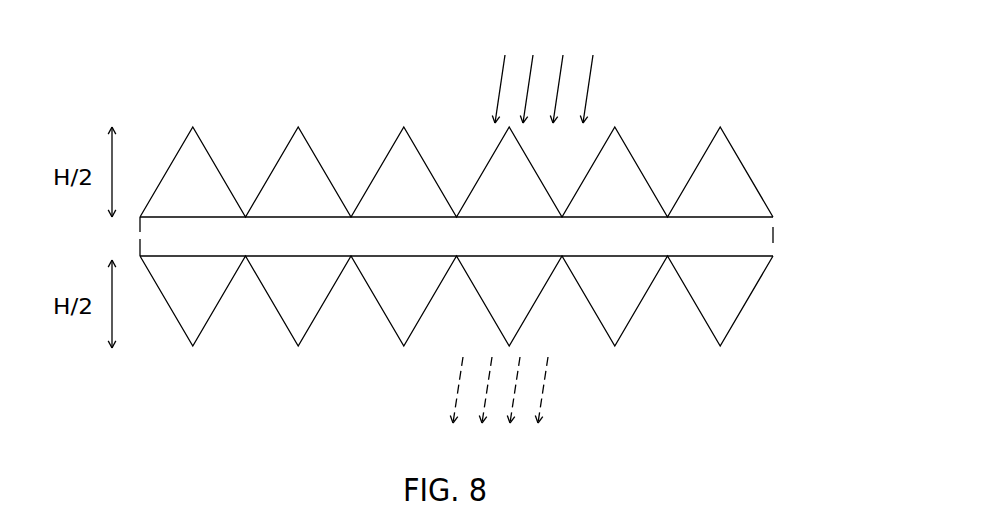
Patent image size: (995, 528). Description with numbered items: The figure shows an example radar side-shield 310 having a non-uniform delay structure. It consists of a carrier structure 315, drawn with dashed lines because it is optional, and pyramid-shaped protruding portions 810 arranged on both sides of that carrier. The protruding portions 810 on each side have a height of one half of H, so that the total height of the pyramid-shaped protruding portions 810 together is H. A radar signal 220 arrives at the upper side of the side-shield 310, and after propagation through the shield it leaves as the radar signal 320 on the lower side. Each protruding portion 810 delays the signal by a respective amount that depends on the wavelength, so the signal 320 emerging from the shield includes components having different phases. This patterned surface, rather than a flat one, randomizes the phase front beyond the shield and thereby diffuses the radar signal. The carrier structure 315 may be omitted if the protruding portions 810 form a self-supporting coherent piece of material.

The radar signal 220 is at (542, 72).
The side-shield 310 is at (489, 216).
The carrier structure 315 is at (597, 244).
The radar signal 320 is at (513, 404).
The pyramid-shaped protruding portions 810 is at (398, 173).